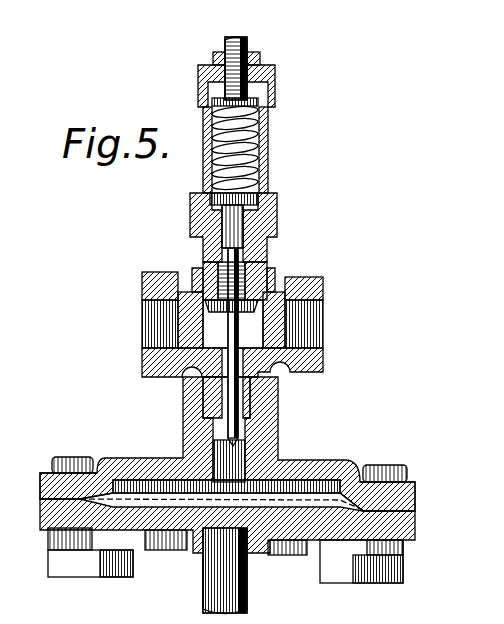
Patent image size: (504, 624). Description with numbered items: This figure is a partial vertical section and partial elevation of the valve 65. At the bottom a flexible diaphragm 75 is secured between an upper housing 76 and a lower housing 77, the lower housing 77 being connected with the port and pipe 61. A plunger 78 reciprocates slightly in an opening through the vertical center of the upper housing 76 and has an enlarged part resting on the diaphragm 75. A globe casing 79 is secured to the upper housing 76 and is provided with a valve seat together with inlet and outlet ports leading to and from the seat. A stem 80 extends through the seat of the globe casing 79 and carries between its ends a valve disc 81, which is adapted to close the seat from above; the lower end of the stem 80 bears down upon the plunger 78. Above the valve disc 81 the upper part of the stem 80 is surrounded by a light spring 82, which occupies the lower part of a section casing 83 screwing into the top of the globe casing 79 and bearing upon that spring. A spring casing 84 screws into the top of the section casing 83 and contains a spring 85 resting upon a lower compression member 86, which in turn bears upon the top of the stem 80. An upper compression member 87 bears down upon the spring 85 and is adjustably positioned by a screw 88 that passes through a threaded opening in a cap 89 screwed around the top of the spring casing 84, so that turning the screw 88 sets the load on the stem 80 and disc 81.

The screw 88 is at (247, 48).
The cap 89 is at (277, 72).
The upper compression member 87 is at (252, 104).
The spring 85 is at (258, 136).
The spring casing 84 is at (268, 160).
The lower compression member 86 is at (242, 213).
The section casing 83 is at (270, 228).
The stem 80 is at (245, 252).
The light spring 82 is at (268, 285).
The valve disc 81 is at (207, 306).
The globe casing 79 is at (281, 357).
The valve 65 is at (227, 444).
The plunger 78 is at (228, 460).
The flexible diaphragm 75 is at (318, 483).
The upper housing 76 is at (413, 492).
The lower housing 77 is at (410, 525).
The pipe 61 is at (208, 597).